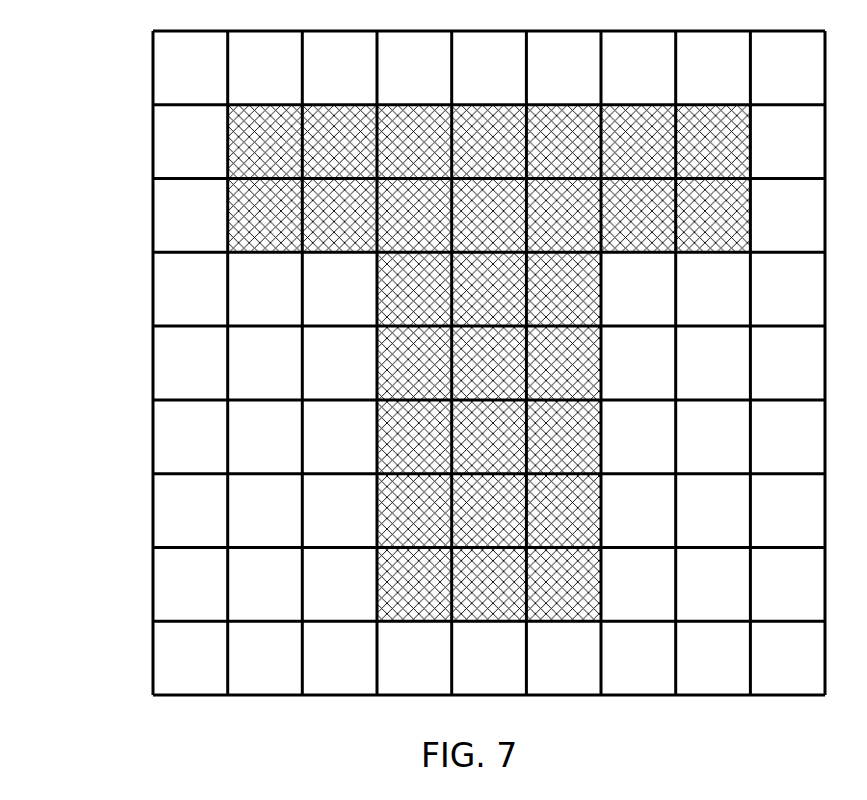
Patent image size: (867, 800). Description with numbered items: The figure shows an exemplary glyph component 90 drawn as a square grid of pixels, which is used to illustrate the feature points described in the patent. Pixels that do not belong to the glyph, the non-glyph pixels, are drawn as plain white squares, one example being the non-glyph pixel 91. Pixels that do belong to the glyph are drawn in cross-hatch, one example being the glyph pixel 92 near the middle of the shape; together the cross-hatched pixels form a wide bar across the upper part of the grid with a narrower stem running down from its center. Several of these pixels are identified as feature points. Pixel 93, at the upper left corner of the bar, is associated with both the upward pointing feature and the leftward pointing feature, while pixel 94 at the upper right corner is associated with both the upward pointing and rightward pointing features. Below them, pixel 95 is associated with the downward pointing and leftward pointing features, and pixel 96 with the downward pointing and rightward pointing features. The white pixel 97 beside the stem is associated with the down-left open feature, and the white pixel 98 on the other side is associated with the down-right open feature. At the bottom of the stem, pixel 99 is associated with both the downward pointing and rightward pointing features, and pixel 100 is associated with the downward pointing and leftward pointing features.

The glyph component 90 is at (138, 523).
The non-glyph pixel 91 is at (279, 377).
The glyph pixel 92 is at (503, 377).
The pixel 93 is at (284, 155).
The pixel 94 is at (729, 155).
The pixel 95 is at (282, 227).
The pixel 96 is at (725, 228).
The pixel 97 is at (362, 301).
The pixel 98 is at (658, 302).
The pixel 99 is at (577, 594).
The pixel 100 is at (437, 594).